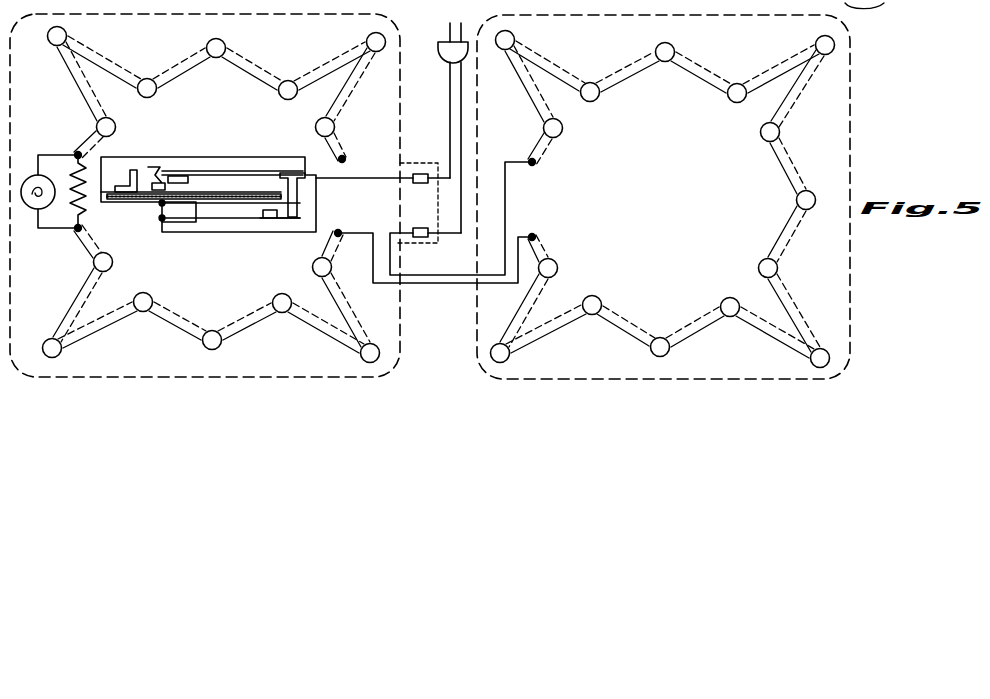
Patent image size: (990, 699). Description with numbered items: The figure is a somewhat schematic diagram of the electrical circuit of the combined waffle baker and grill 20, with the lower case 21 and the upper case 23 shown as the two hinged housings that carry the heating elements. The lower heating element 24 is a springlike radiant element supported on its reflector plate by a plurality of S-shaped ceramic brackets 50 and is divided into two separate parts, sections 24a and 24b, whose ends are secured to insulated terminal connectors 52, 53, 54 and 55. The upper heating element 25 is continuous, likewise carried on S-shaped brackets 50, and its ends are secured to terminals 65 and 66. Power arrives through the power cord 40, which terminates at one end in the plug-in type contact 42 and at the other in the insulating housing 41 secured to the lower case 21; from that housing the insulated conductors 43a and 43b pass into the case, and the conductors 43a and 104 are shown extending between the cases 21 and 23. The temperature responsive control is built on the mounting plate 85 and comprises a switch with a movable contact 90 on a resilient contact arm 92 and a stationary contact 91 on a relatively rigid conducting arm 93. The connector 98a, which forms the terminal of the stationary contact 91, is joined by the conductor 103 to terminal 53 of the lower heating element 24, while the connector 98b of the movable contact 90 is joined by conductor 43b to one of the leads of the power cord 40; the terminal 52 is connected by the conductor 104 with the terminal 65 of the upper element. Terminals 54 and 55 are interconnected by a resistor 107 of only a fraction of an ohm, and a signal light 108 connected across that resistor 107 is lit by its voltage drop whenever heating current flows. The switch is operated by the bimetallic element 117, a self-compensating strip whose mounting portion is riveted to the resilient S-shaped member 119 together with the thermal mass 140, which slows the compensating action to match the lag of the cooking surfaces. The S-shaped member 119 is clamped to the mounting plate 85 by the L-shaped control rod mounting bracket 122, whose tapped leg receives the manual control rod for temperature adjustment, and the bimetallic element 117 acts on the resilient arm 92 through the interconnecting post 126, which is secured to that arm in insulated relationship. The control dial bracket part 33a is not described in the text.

The combined waffle baker and grill 20 is at (455, 365).
The lower case 21 is at (394, 352).
The upper case 23 is at (853, 141).
The lower heating element 24 is at (271, 70).
The heating element section 24a is at (238, 323).
The heating element section 24b is at (244, 71).
The upper heating element 25 is at (719, 72).
The connector 33a is at (879, 6).
The power cord 40 is at (450, 98).
The insulating housing 41 is at (418, 162).
The plug-in type contact 42 is at (440, 50).
The insulated electrical conductor 43a is at (460, 276).
The insulated electrical conductor 43b is at (370, 170).
The S-shaped ceramic bracket 50 is at (67, 34).
The terminal connector 52 is at (339, 233).
The terminal connector 53 is at (342, 159).
The terminal connector 54 is at (78, 230).
The terminal connector 55 is at (78, 154).
The terminal 65 is at (535, 237).
The terminal 66 is at (535, 162).
The mounting plate 85 is at (248, 191).
The movable contact 90 is at (268, 219).
The stationary contact 91 is at (281, 219).
The resilient contact arm 92 is at (238, 231).
The conducting arm 93 is at (212, 230).
The connector 98a is at (161, 203).
The connector 98b is at (161, 218).
The conductor 103 is at (163, 161).
The conductor 104 is at (460, 283).
The resistor 107 is at (72, 205).
The signal light 108 is at (54, 168).
The bimetallic element 117 is at (230, 172).
The resilient S-shaped member 119 is at (158, 167).
The L-shaped control rod mounting bracket 122 is at (133, 170).
The interconnecting rod or post 126 is at (299, 179).
The thermal mass 140 is at (189, 180).